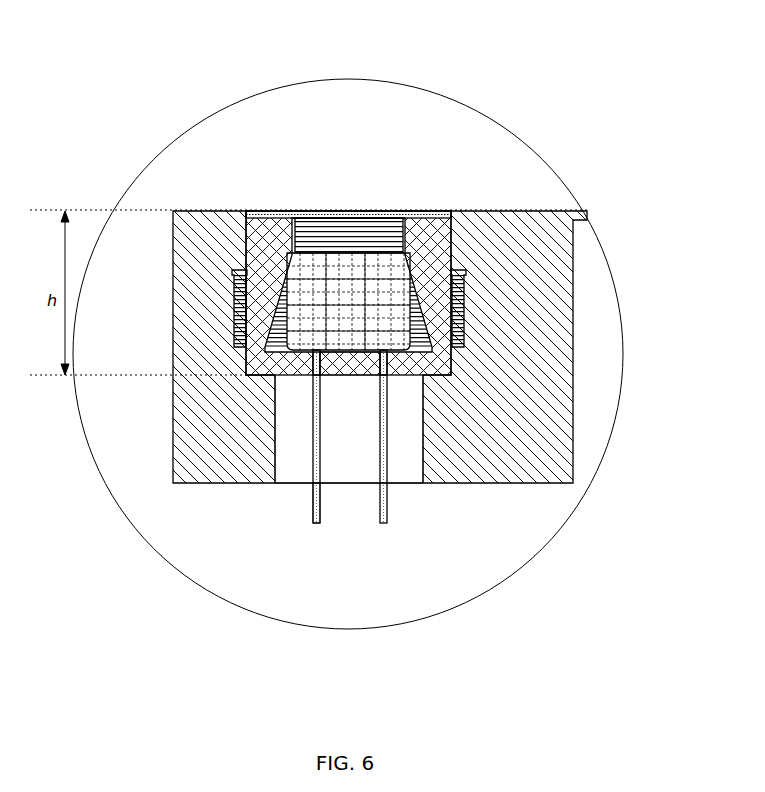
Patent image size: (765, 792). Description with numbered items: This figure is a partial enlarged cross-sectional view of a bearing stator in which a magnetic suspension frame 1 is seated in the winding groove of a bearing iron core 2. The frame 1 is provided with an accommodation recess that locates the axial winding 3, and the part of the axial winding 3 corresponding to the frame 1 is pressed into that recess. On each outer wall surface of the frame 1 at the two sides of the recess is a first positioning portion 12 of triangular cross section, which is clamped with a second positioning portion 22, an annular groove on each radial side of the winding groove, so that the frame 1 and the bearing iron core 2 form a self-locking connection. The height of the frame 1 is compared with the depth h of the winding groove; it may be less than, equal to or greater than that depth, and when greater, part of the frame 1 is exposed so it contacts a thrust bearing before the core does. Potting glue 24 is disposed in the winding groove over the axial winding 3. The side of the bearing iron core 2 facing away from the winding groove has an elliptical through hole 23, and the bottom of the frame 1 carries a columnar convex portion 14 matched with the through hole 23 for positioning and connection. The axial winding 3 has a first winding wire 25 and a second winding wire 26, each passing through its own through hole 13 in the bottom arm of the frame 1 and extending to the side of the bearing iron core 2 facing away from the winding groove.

The frame 1 is at (423, 242).
The bearing iron core 2 is at (528, 262).
The axial winding 3 is at (313, 293).
The first positioning portion 12 is at (236, 290).
The through hole 13 is at (311, 377).
The convex portion 14 is at (352, 380).
The second positioning portion 22 is at (463, 273).
The through hole 23 is at (400, 460).
The potting glue 24 is at (337, 223).
The first winding wire 25 is at (313, 487).
The second winding wire 26 is at (389, 512).